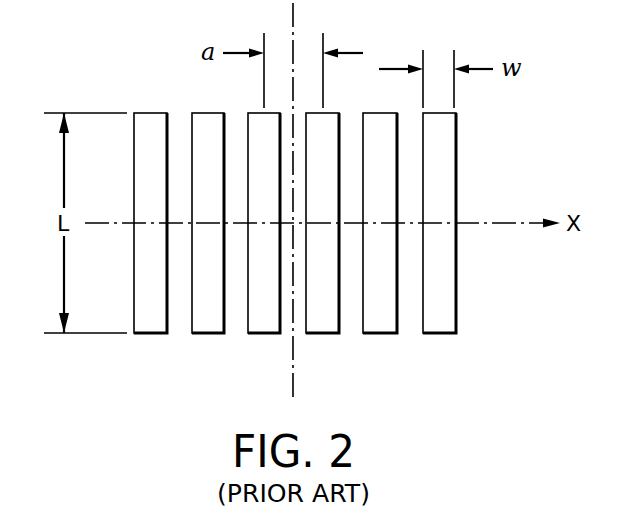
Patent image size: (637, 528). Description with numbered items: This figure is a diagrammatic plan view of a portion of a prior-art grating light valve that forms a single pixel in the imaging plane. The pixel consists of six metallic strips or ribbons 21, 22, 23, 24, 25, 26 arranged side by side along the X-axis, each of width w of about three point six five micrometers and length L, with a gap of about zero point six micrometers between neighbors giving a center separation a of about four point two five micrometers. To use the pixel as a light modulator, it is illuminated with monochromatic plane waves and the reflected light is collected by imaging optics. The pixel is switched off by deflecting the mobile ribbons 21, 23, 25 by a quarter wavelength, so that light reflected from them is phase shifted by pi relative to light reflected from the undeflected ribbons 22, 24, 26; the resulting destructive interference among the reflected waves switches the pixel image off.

The mobile ribbon 21 is at (147, 333).
The undeflected ribbon 22 is at (204, 333).
The mobile ribbon 23 is at (260, 333).
The undeflected ribbon 24 is at (325, 333).
The mobile ribbon 25 is at (383, 333).
The undeflected ribbon 26 is at (440, 333).